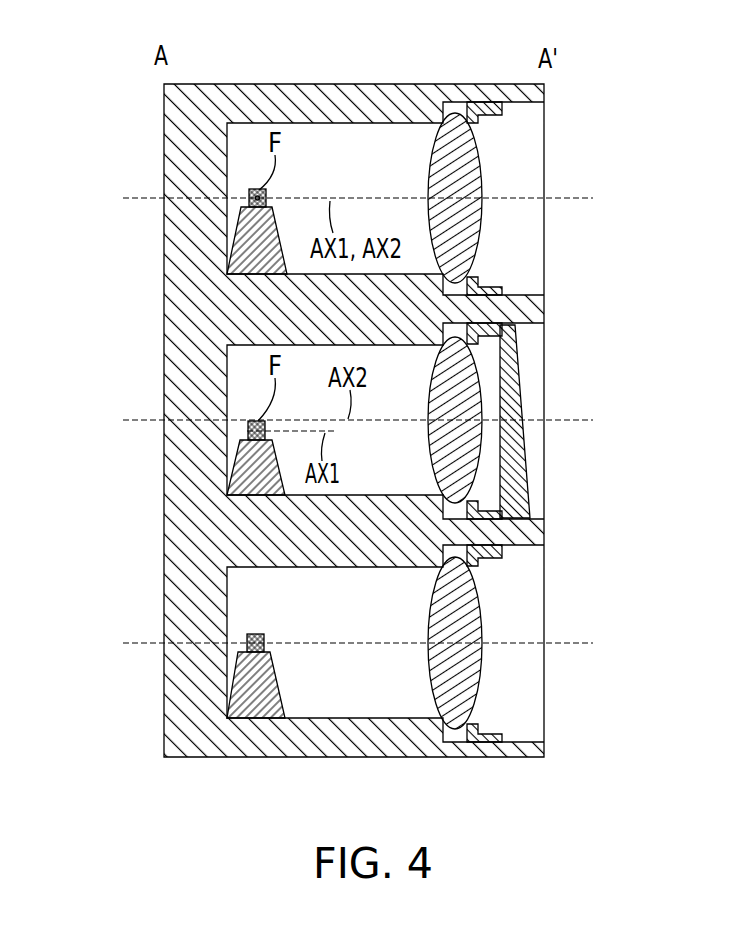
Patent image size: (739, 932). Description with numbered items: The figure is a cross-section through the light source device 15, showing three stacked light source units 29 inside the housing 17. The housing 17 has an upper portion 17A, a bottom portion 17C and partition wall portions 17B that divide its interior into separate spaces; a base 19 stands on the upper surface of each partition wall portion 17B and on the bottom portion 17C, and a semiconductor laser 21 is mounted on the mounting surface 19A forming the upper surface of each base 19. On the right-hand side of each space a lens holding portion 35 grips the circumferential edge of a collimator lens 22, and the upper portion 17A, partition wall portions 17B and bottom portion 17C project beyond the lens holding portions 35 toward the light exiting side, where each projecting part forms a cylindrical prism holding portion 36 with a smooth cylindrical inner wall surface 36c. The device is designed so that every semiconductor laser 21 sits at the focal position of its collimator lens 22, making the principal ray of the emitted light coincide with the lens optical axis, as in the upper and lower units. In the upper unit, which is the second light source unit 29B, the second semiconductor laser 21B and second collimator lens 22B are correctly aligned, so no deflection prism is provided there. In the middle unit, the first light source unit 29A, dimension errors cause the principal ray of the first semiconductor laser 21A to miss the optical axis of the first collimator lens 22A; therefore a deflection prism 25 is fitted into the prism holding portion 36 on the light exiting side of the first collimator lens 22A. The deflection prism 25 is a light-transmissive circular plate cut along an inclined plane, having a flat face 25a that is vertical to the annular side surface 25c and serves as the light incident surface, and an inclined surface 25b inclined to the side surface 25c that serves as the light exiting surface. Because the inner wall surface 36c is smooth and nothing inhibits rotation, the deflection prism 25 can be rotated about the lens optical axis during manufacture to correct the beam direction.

The light source device 15 is at (245, 80).
The housing 17 is at (193, 553).
The upper portion 17A is at (334, 84).
The partition wall portion 17B is at (335, 567).
The bottom portion 17C is at (335, 757).
The base 19 is at (243, 233).
The mounting surface 19A is at (272, 208).
The semiconductor laser 21 is at (255, 643).
The first semiconductor laser 21A is at (248, 431).
The second semiconductor laser 21B is at (249, 195).
The collimator lens 22 is at (455, 643).
The first collimator lens 22A is at (482, 468).
The second collimator lens 22B is at (470, 240).
The deflection prism 25 is at (510, 395).
The flat face 25a is at (492, 358).
The inclined surface 25b is at (528, 440).
The side surface 25c is at (530, 522).
The light source unit 29 is at (243, 614).
The first light source unit 29A is at (245, 370).
The second light source unit 29B is at (245, 148).
The lens holding portion 35 is at (456, 101).
The prism holding portion 36 is at (517, 126).
The inner wall surface 36c is at (544, 105).